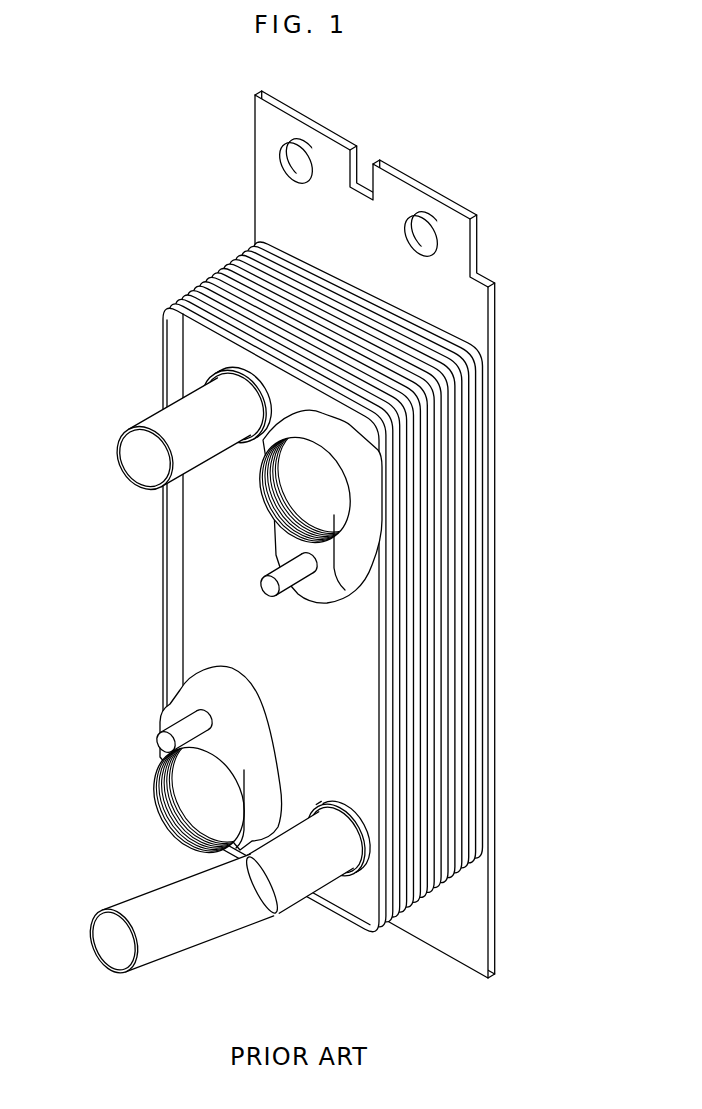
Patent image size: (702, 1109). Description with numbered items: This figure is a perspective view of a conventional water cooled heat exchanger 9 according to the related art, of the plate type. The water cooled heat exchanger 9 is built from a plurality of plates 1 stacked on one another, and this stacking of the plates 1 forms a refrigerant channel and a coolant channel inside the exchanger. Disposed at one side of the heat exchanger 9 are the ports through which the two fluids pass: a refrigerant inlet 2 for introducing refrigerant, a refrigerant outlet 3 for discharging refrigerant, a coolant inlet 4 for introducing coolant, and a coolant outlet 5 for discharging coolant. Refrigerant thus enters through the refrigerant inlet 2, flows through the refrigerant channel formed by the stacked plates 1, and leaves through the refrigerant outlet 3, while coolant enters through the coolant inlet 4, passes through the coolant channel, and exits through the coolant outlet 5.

The plates 1 is at (433, 730).
The refrigerant inlet 2 is at (285, 502).
The refrigerant outlet 3 is at (172, 805).
The coolant inlet 4 is at (113, 945).
The coolant outlet 5 is at (128, 466).
The water cooled heat exchanger 9 is at (486, 632).